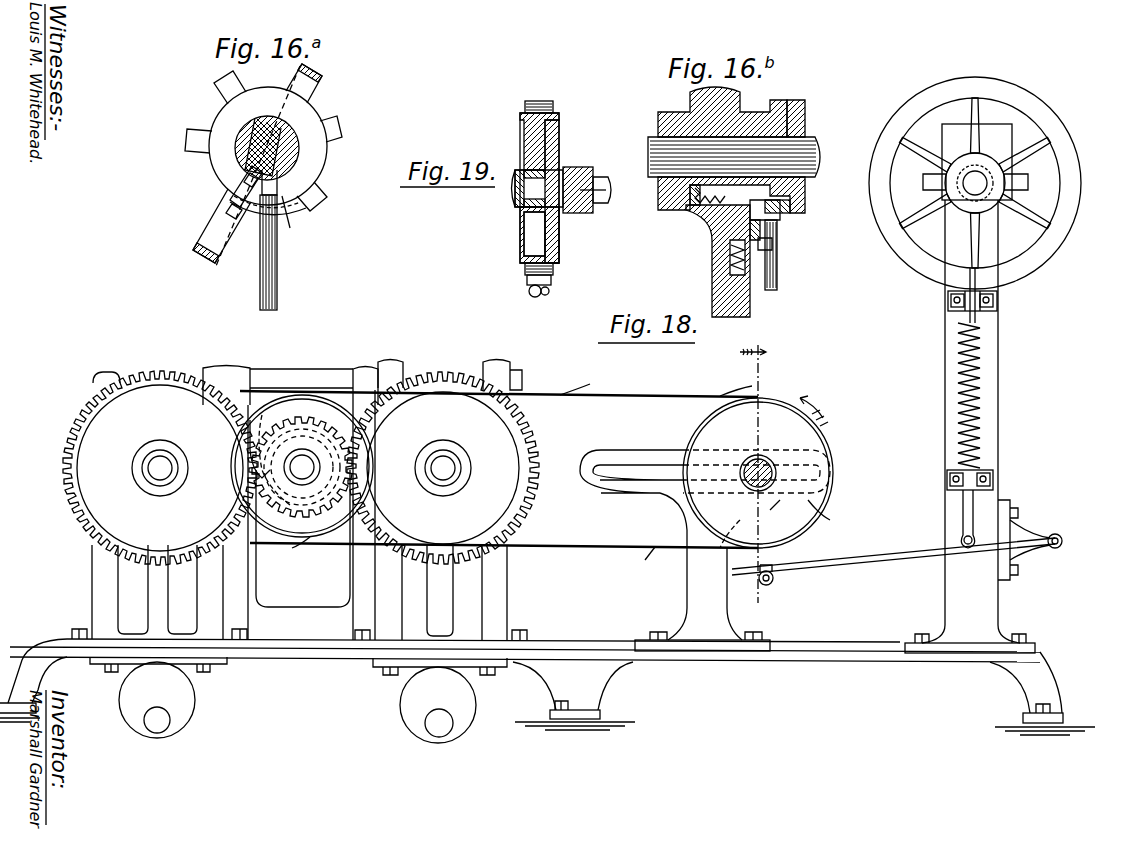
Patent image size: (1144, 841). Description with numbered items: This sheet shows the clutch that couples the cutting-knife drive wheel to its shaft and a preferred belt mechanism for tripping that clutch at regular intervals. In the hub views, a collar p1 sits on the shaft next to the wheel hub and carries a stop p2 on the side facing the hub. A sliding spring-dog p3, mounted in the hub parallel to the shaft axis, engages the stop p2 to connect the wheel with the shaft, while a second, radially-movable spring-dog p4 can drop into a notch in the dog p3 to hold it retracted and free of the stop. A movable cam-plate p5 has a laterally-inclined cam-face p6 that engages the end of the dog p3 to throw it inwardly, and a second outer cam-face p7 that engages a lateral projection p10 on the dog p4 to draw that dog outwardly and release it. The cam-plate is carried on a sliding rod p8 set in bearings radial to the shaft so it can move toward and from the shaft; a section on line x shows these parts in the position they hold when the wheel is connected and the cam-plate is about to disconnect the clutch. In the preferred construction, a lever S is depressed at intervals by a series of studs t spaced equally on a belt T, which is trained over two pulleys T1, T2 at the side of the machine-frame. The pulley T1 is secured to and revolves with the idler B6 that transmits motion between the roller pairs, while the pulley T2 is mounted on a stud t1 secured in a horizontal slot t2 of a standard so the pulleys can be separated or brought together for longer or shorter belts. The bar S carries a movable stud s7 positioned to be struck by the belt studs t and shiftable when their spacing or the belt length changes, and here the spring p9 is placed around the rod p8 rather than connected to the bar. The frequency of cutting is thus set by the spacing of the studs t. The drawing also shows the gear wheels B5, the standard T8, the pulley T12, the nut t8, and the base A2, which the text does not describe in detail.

In FIG. 16A, the section line x is at (260, 166).
In FIG. 16A, the collar p1 is at (263, 163).
In FIG. 16B, the collar p1 is at (805, 120).
In FIG. 16A, the stop p2 is at (279, 185).
In FIG. 16A, the sliding spring-dog p3 is at (244, 182).
In FIG. 16B, the sliding spring-dog p3 is at (686, 215).
In FIG. 16A, the radially-movable spring-dog p4 is at (235, 204).
In FIG. 16B, the radially-movable spring-dog p4 is at (712, 243).
In FIG. 16A, the cam-plate p5 is at (300, 206).
In FIG. 16B, the cam-plate p5 is at (780, 215).
In FIG. 16B, the laterally-inclined cam-face p6 is at (790, 208).
In FIG. 16A, the outer inclined cam-face p7 is at (292, 222).
In FIG. 16B, the outer inclined cam-face p7 is at (760, 232).
In FIG. 16A, the sliding rod p8 is at (277, 272).
In FIG. 16B, the sliding rod p8 is at (777, 286).
In FIG. 18, the sliding rod p8 is at (963, 500).
In FIG. 18, the spring p9 is at (958, 426).
In FIG. 16A, the lateral projection p10 is at (226, 213).
In FIG. 16B, the lateral projection p10 is at (772, 246).
In FIG. 19, the studs t is at (530, 105).
In FIG. 18, the studs t is at (701, 442).
In FIG. 19, the stud t1 is at (531, 188).
In FIG. 18, the stud t1 is at (532, 533).
In FIG. 19, the horizontal slot t2 is at (580, 167).
In FIG. 18, the horizontal slot t2 is at (660, 470).
In FIG. 19, the bolt t8 is at (610, 188).
In FIG. 19, the belt T is at (553, 105).
In FIG. 18, the pulley T1 is at (494, 469).
In FIG. 19, the pulley T2 is at (543, 225).
In FIG. 18, the standard T8 is at (702, 572).
In FIG. 18, the idler pulley T12 is at (758, 474).
In FIG. 19, the movable stud s7 is at (527, 280).
In FIG. 18, the movable stud s7 is at (772, 582).
In FIG. 18, the lever S is at (900, 556).
In FIG. 18, the gear wheel B5 is at (301, 468).
In FIG. 18, the idler B6 is at (301, 466).
In FIG. 18, the base frame A2 is at (605, 636).